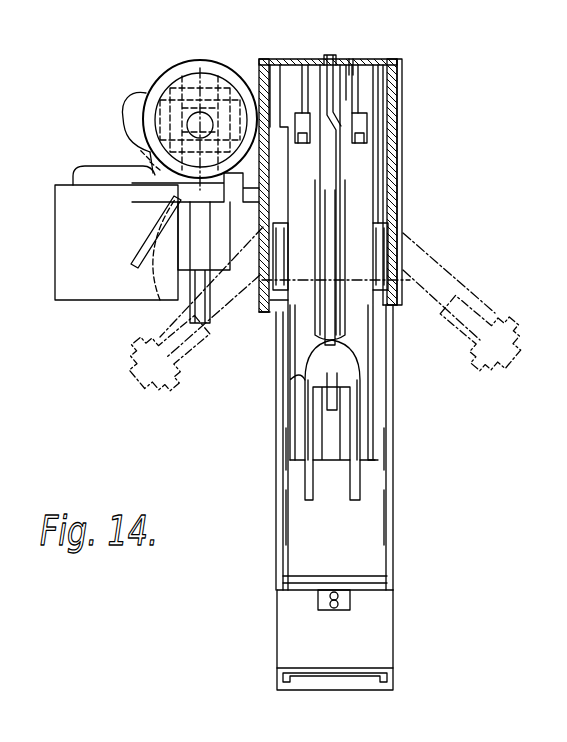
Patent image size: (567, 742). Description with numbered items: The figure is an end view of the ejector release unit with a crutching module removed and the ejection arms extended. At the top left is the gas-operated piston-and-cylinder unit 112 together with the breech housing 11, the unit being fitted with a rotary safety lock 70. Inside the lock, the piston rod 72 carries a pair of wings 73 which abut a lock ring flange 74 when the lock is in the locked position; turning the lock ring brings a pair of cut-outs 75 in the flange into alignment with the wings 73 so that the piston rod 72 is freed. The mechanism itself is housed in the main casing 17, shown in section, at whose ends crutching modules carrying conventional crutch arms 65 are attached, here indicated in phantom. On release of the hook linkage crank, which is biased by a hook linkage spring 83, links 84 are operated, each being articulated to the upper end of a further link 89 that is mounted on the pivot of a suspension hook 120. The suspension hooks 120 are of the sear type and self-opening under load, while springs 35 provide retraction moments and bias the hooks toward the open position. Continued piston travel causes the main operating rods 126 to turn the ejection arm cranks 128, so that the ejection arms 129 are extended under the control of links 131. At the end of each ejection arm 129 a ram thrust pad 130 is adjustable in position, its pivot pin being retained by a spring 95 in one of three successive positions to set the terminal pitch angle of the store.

The breech housing 11 is at (58, 196).
The main casing 17 is at (402, 73).
The spring 35 is at (403, 254).
The crutch arm 65 is at (467, 330).
The rotary safety lock 70 is at (143, 97).
The piston rod 72 is at (224, 82).
The wings 73 is at (194, 72).
The lock ring flange 74 is at (158, 117).
The cut-outs 75 is at (253, 62).
The hook linkage spring 83 is at (349, 60).
The link 84 is at (325, 62).
The further link 89 is at (336, 162).
The spring 95 is at (352, 598).
The gas-operated piston-and-cylinder unit 112 is at (184, 60).
The suspension hook 120 is at (323, 267).
The main operating rod 126 is at (302, 126).
The ejection arm crank 128 is at (357, 333).
The ejection arm 129 is at (384, 488).
The ram thrust pad 130 is at (339, 680).
The link 131 is at (376, 193).